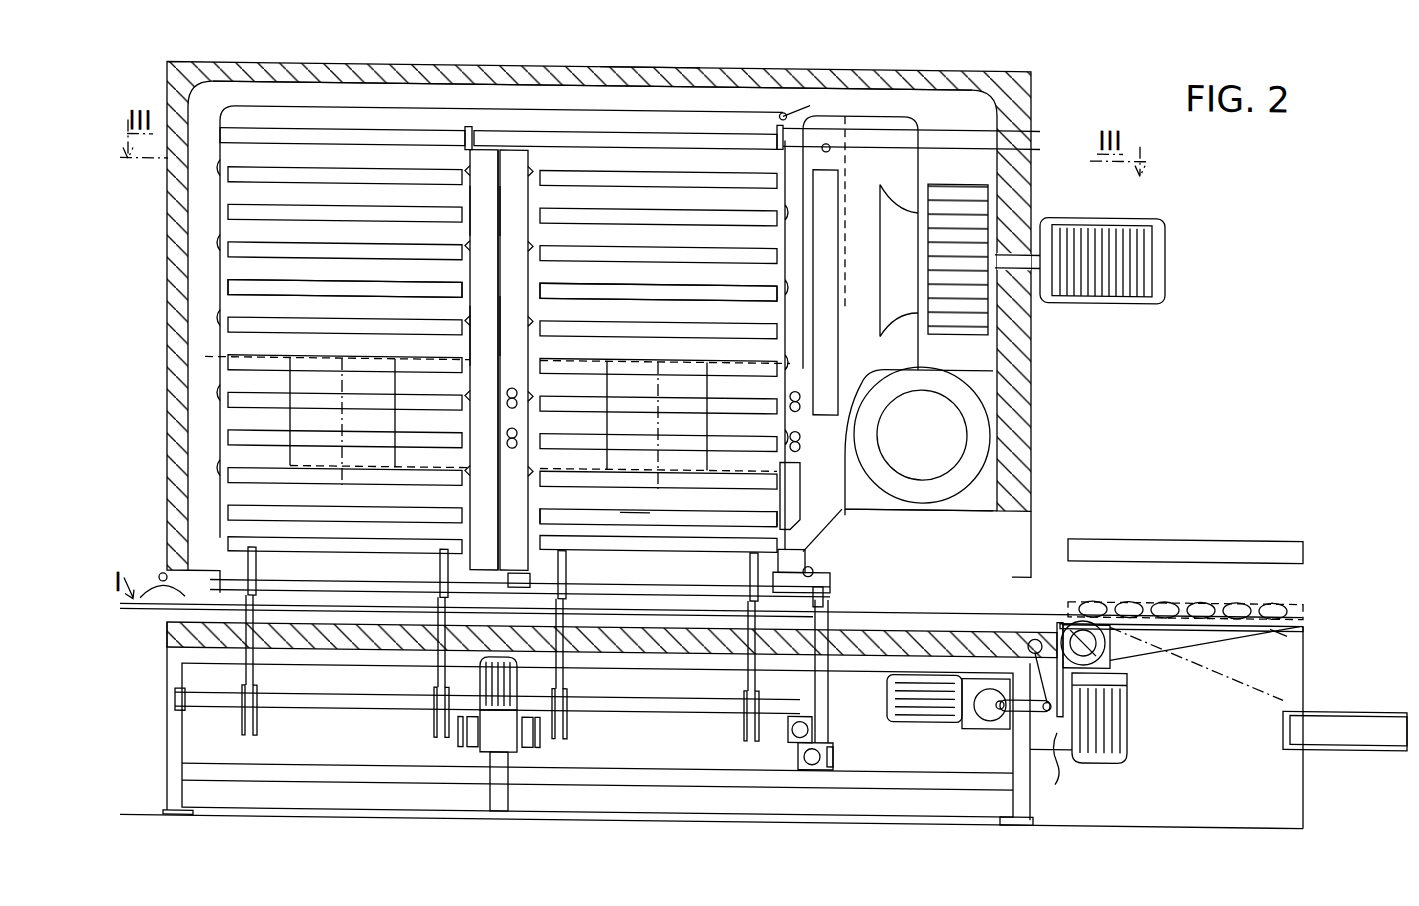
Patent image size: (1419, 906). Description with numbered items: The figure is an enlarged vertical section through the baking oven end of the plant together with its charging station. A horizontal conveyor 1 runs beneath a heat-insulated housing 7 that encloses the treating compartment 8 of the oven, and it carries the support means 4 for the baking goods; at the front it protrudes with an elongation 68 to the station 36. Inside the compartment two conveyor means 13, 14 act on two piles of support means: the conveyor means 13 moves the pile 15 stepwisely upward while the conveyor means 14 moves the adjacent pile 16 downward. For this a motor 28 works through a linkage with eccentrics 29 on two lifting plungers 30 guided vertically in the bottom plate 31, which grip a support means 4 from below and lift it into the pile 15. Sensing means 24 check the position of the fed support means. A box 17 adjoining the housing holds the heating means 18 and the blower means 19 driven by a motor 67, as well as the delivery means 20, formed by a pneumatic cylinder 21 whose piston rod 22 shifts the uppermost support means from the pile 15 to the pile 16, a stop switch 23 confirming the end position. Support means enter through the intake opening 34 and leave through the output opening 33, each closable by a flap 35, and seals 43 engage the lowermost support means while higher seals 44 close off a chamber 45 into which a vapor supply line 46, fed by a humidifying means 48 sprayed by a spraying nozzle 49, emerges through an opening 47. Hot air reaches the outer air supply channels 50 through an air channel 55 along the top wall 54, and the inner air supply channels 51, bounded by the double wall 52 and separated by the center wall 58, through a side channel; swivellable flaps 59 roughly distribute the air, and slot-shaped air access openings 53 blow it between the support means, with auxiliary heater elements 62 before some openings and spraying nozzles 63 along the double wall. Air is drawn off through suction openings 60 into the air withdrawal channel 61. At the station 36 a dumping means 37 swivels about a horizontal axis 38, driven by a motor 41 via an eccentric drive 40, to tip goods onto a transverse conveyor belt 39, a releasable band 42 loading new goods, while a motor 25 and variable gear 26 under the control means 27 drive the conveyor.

The conveyor 1 is at (965, 606).
The support means 4 is at (287, 160).
The housing 7 is at (487, 51).
The treating compartment 8 is at (665, 140).
The conveyor means 13 is at (662, 722).
The conveyor means 14 is at (309, 713).
The pile 15 is at (662, 282).
The pile 16 is at (312, 281).
The box 17 is at (1022, 400).
The heating means 18 is at (908, 424).
The blower means 19 is at (970, 285).
The delivery means 20 is at (952, 121).
The pneumatic cylinder 21 is at (952, 148).
The piston rod 22 is at (598, 122).
The stop switch 23 is at (222, 98).
The sensing means 24 is at (806, 556).
The motor 25 is at (1115, 733).
The variable gear 26 is at (1108, 657).
The control means 27 is at (1052, 714).
The motor 28 is at (505, 692).
The eccentrics 29 is at (458, 730).
The lifting plungers 30 is at (257, 570).
The bottom plate 31 is at (332, 640).
The output opening 33 is at (163, 575).
The intake opening 34 is at (831, 577).
The flap 35 is at (825, 594).
The station 36 is at (1302, 586).
The dumping means 37 is at (1290, 624).
The horizontal axis 38 is at (1066, 610).
The conveyor belt 39 is at (1335, 722).
The eccentric drive 40 is at (1020, 707).
The motor 41 is at (910, 712).
The releasable band 42 is at (1170, 550).
The seals 43 is at (226, 550).
The seals 44 is at (540, 482).
The chamber 45 is at (635, 495).
The vapor supply line 46 is at (808, 490).
The opening 47 is at (815, 533).
The humidifying means 48 is at (823, 303).
The spraying nozzle 49 is at (830, 140).
The air supply channels 50 is at (792, 182).
The air supply channel 51 is at (502, 304).
The double wall 52 is at (528, 252).
The air access openings 53 is at (472, 200).
The top wall 54 is at (655, 75).
The air channel 55 is at (410, 92).
The center wall 58 is at (495, 232).
The swivellable flaps 59 is at (783, 103).
The suction opening 60 is at (395, 383).
The air withdrawal channel 61 is at (886, 463).
The auxiliary heater elements 62 is at (518, 437).
The spraying nozzles 63 is at (528, 162).
The motor 67 is at (1148, 252).
The elongation 68 is at (932, 600).